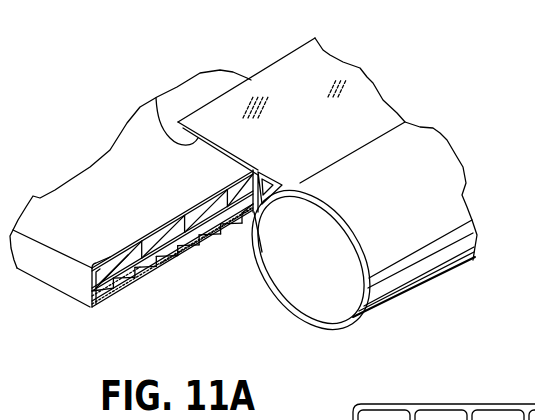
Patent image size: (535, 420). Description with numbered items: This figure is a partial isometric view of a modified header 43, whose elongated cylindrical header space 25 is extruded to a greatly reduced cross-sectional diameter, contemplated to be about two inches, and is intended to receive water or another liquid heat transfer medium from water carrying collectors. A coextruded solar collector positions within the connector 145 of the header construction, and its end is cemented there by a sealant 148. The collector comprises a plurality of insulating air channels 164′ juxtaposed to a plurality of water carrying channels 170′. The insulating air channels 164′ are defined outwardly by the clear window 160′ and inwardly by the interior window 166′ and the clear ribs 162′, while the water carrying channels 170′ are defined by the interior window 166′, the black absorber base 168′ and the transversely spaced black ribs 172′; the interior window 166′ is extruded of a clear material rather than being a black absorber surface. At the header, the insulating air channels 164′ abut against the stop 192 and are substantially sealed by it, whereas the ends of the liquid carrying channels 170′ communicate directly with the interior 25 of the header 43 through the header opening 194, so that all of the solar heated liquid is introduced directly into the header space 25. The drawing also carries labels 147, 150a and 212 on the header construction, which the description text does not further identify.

The header space 25 is at (323, 307).
The modified header 43 is at (282, 312).
The connector 145 is at (250, 92).
The clip connector 147 is at (268, 187).
The sealant 148 is at (156, 98).
The rolled loop edge 150a is at (262, 208).
The clear window 160′ is at (98, 197).
The clear ribs 162′ is at (193, 217).
The insulating air channels 164′ is at (103, 271).
The interior window 166′ is at (97, 285).
The black absorber base 168′ is at (157, 277).
The water carrying channels 170′ is at (100, 305).
The black ribs 172′ is at (215, 233).
The stop 192 is at (240, 187).
The header opening 194 is at (260, 205).
The cell 212 is at (446, 412).